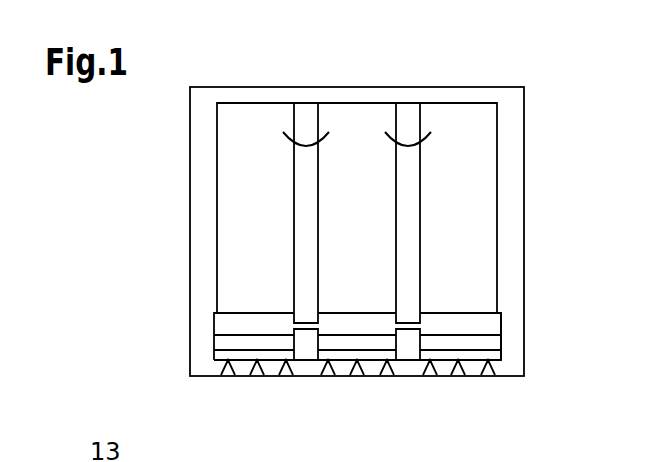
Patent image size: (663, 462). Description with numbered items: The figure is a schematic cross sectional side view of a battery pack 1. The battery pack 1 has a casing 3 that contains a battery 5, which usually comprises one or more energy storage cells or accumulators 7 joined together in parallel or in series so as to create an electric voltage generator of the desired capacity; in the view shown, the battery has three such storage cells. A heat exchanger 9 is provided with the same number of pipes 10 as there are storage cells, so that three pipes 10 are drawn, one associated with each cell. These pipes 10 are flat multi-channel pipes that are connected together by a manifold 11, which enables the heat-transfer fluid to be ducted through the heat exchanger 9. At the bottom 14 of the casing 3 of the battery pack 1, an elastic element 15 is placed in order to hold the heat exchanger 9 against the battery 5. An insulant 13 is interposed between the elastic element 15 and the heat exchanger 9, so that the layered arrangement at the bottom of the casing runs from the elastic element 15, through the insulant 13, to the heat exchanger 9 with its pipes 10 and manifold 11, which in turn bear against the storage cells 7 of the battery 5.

The battery pack 1 is at (451, 62).
The casing 3 is at (524, 120).
The battery 5 is at (308, 115).
The energy storage cells 7 is at (353, 209).
The heat exchanger 9 is at (517, 327).
The pipes 10 is at (270, 325).
The manifold 11 is at (405, 318).
The insulant 13 is at (223, 342).
The bottom 14 is at (242, 378).
The elastic element 15 is at (223, 356).